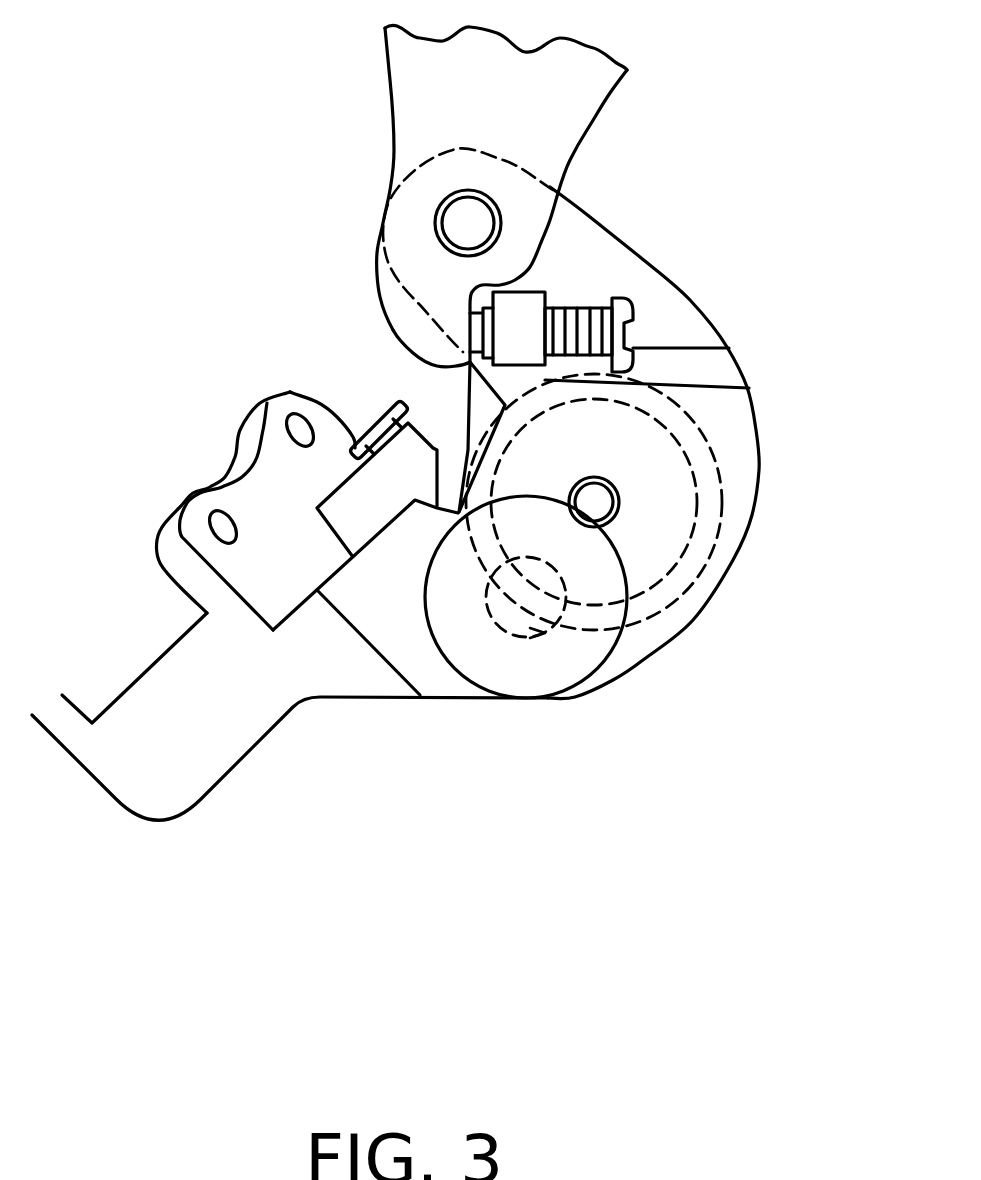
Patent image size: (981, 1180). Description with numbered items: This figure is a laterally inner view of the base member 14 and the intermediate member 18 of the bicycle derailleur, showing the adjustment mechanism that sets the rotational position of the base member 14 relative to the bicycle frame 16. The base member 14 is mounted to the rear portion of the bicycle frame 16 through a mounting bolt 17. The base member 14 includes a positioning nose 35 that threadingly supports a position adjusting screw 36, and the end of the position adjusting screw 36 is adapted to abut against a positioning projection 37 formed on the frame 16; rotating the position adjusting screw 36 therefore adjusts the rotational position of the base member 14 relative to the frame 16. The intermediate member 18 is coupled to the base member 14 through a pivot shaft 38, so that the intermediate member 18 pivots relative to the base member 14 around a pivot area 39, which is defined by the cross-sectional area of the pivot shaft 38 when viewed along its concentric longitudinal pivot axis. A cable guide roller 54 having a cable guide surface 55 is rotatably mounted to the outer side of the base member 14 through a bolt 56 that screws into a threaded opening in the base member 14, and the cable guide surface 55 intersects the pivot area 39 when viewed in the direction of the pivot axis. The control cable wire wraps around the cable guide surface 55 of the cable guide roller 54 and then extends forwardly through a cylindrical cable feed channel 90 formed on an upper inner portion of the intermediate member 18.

The base member 14 is at (655, 255).
The bicycle frame 16 is at (417, 82).
The mounting bolt 17 is at (457, 223).
The intermediate member 18 is at (340, 693).
The positioning nose 35 is at (522, 305).
The position adjusting screw 36 is at (620, 323).
The positioning projection 37 is at (425, 353).
The pivot shaft 38 is at (517, 633).
The pivot area 39 is at (487, 612).
The cable guide roller 54 is at (712, 448).
The cable guide surface 55 is at (698, 503).
The bolt 56 is at (603, 498).
The cable feed channel 90 is at (357, 427).